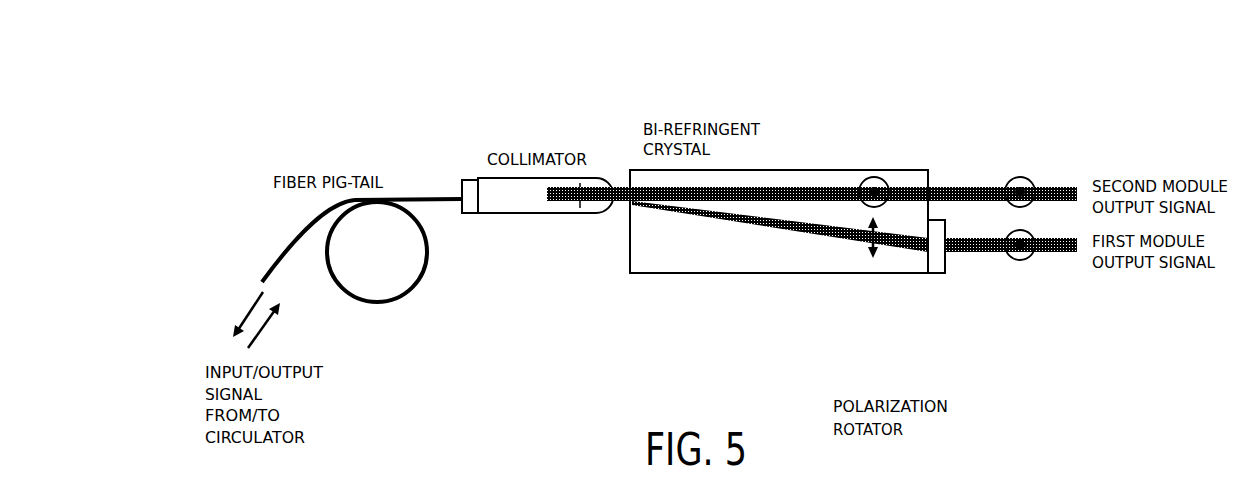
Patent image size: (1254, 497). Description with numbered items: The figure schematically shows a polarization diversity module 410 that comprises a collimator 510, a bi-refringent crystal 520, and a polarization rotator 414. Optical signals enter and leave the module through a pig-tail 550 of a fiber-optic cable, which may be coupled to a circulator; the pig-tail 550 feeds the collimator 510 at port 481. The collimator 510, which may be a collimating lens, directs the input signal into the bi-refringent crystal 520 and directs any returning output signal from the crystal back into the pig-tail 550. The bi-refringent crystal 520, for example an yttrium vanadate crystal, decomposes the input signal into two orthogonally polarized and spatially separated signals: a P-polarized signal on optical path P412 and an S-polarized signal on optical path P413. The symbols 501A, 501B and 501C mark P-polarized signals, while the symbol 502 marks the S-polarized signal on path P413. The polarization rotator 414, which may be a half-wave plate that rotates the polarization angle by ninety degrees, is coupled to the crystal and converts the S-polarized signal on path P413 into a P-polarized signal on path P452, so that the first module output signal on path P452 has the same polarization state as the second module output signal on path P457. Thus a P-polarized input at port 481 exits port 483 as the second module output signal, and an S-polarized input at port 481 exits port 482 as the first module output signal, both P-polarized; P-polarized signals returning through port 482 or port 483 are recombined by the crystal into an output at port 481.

The polarization diversity module 410 is at (503, 133).
The port 481 is at (470, 180).
The collimator 510 is at (547, 215).
The pig-tail 550 is at (390, 307).
The bi-refringent crystal 520 is at (630, 252).
The polarization rotator 414 is at (927, 273).
The port 483 is at (929, 183).
The port 482 is at (957, 252).
The optical path P412 is at (785, 186).
The optical path P413 is at (763, 225).
The optical path P457 is at (988, 187).
The optical path P452 is at (967, 252).
The P-polarized signal symbol 501A is at (889, 177).
The P-polarized signal symbol 501B is at (1027, 177).
The P-polarized signal symbol 501C is at (1023, 261).
The S-polarized signal symbol 502 is at (853, 233).